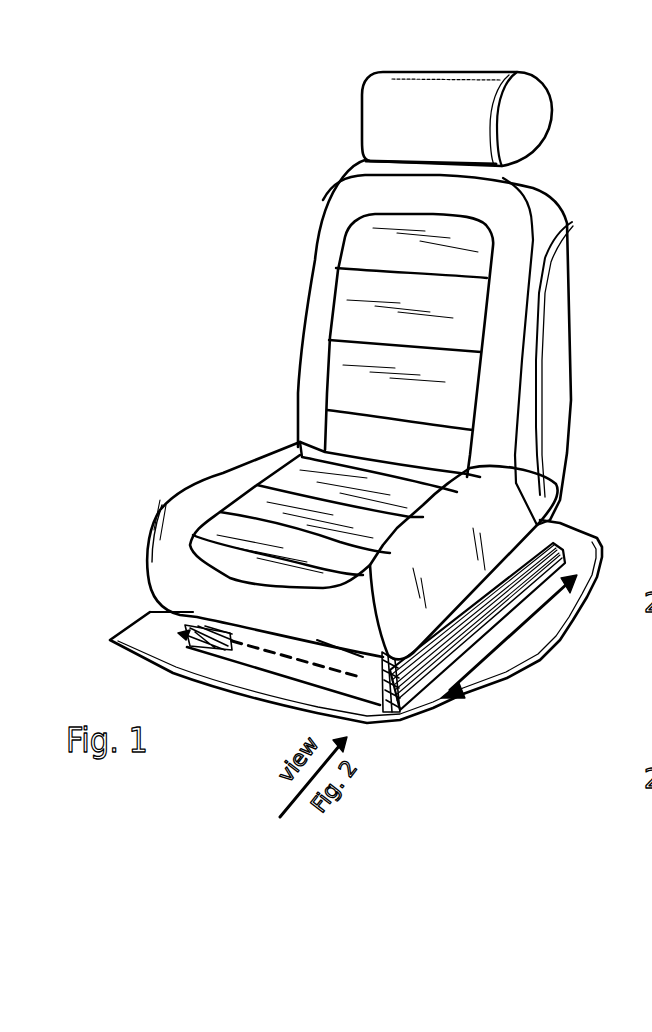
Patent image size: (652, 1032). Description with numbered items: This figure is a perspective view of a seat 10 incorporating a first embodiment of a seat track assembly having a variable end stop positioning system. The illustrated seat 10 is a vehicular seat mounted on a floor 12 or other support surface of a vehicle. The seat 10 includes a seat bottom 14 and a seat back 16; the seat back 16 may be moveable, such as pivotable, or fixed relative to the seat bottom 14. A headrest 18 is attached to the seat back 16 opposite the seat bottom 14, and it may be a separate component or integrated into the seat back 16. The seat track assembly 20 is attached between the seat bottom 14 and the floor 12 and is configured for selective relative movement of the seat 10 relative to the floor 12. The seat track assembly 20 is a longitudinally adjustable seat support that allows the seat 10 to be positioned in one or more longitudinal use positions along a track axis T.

The seat 10 is at (351, 429).
The floor 12 is at (153, 633).
The seat bottom 14 is at (222, 485).
The seat back 16 is at (327, 257).
The headrest 18 is at (527, 133).
The seat track assembly 20 is at (417, 689).
The track axis T is at (499, 647).